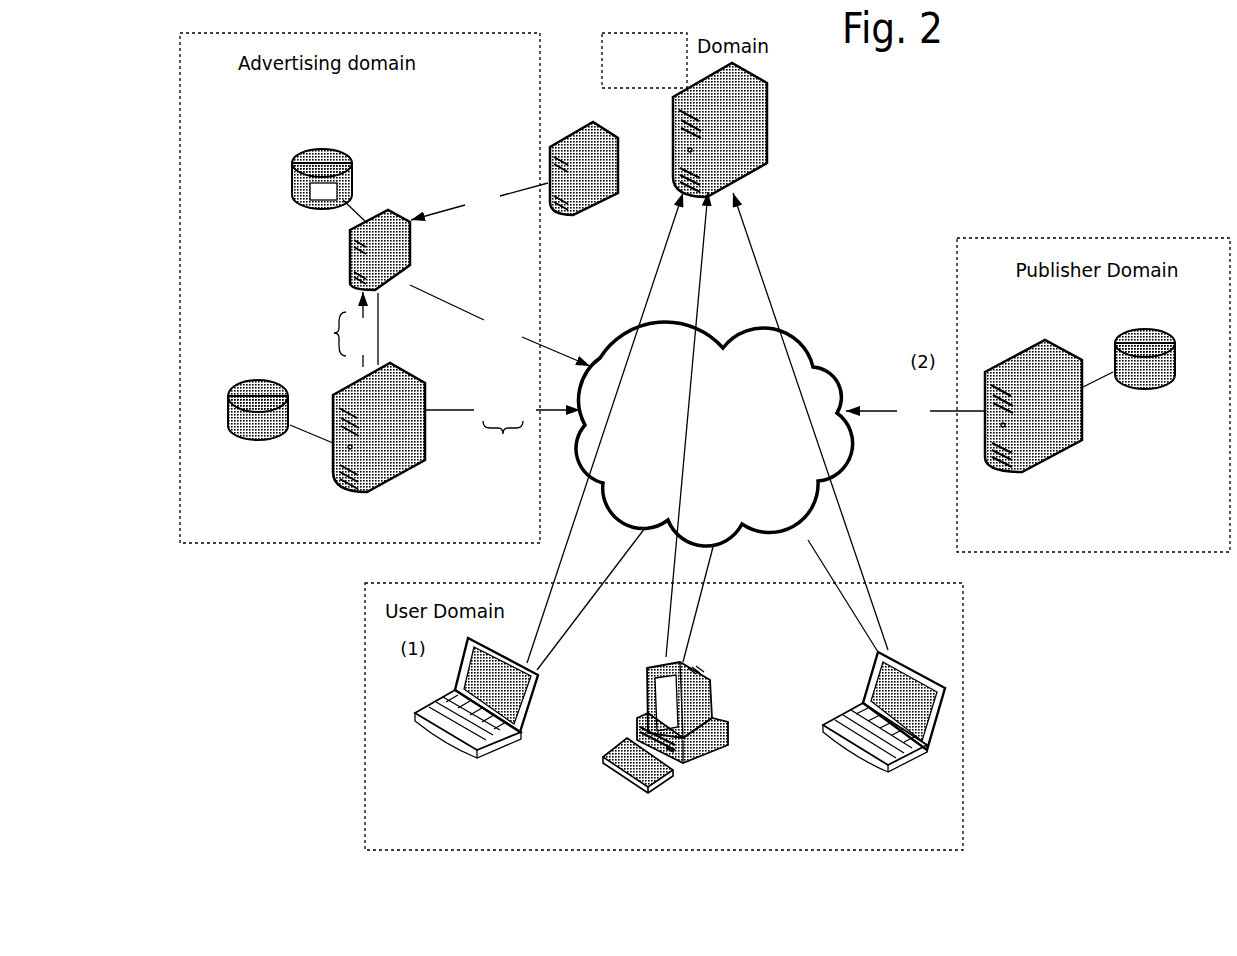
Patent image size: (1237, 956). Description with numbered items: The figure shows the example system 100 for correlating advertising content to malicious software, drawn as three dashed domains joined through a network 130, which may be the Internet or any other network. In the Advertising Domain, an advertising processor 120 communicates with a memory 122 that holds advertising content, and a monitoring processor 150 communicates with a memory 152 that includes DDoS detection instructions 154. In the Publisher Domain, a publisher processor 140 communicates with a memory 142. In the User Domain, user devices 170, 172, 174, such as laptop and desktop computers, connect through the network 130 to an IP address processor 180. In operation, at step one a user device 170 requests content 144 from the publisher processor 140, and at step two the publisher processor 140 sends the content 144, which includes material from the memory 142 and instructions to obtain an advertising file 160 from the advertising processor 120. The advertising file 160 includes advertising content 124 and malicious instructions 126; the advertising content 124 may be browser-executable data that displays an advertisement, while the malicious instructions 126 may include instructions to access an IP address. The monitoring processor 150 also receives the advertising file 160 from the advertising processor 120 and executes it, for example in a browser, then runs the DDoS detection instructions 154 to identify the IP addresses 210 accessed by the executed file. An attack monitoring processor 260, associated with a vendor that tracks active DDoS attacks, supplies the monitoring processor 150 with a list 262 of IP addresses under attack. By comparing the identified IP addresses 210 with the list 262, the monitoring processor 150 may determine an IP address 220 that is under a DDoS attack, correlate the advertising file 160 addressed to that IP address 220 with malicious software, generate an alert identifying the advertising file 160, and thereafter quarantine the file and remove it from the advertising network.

The system 100 is at (852, 220).
The advertising processor 120 is at (405, 471).
The memory 122 is at (227, 425).
The advertising content 124 is at (442, 355).
The malicious instructions 126 is at (464, 372).
The network 130 is at (700, 443).
The publisher processor 140 is at (1066, 450).
The memory 142 is at (1125, 330).
The content 144 is at (915, 411).
The monitoring processor 150 is at (399, 276).
The memory 152 is at (303, 148).
The DDoS detection instructions 154 is at (317, 202).
The advertising file 160 is at (413, 384).
The user device 170 is at (443, 747).
The user device 172 is at (625, 775).
The user device 174 is at (847, 760).
The IP address processor 180 is at (757, 172).
The IP addresses 210 is at (500, 325).
The IP address 220 is at (644, 60).
The attack monitoring processor 260 is at (587, 215).
The list of IP addresses 262 is at (479, 201).